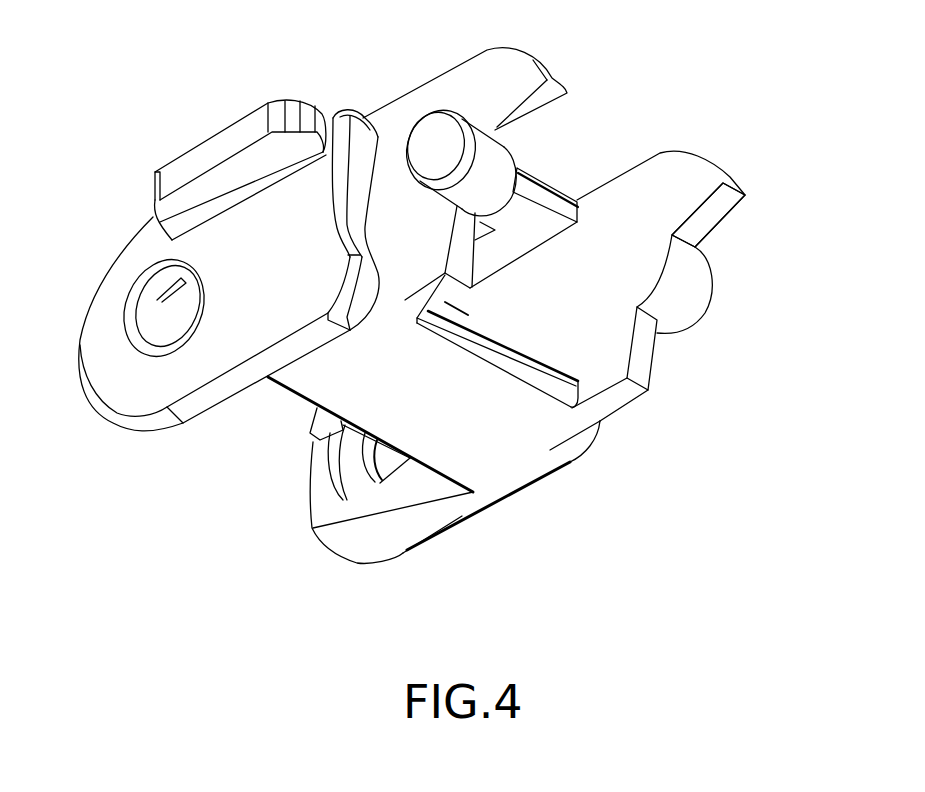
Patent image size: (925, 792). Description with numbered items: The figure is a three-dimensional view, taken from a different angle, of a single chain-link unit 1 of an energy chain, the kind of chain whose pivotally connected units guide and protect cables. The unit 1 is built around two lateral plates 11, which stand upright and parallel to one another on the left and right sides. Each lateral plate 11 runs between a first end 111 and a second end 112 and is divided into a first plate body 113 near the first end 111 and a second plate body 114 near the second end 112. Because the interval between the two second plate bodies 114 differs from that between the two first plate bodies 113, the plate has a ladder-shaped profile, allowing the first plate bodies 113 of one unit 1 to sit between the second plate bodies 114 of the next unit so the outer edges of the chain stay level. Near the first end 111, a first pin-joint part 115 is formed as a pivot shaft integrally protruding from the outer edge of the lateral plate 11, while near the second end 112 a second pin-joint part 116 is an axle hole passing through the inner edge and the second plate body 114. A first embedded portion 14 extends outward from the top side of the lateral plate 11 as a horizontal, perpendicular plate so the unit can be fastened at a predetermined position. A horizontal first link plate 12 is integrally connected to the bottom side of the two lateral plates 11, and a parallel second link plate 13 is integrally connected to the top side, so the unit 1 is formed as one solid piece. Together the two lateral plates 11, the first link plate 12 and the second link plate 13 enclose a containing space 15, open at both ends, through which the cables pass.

The chain-link unit 1 is at (137, 142).
The lateral plate 11 is at (393, 95).
The first end 111 is at (737, 182).
The second end 112 is at (313, 495).
The first plate body 113 is at (708, 215).
The second plate body 114 is at (438, 522).
The first pin-joint part 115 is at (437, 145).
The second pin-joint part 116 is at (143, 317).
The first link plate 12 is at (507, 457).
The second link plate 13 is at (541, 183).
The first embedded portion 14 is at (225, 133).
The containing space 15 is at (517, 322).